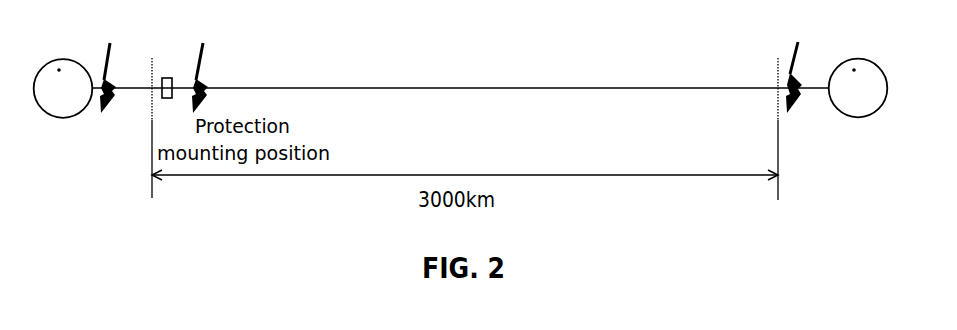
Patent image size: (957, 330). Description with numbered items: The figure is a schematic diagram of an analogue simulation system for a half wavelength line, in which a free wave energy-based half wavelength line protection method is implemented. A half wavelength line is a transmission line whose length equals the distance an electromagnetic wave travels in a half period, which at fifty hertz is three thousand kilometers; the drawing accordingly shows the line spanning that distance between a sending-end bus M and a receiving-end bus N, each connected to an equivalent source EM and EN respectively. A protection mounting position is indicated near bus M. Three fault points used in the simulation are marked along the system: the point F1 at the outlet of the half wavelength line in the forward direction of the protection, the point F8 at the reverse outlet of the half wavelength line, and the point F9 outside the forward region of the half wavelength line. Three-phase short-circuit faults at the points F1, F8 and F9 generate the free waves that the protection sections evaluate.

The fault point at outlet of half wavelength line F1 is at (213, 78).
The fault point at reverse outlet of half wavelength line F8 is at (120, 78).
The fault point outside forward region of half wavelength line F9 is at (803, 77).
The bus M is at (150, 116).
The bus N is at (779, 117).
The equivalent source at M side EM is at (63, 88).
The equivalent source at N side EN is at (858, 88).